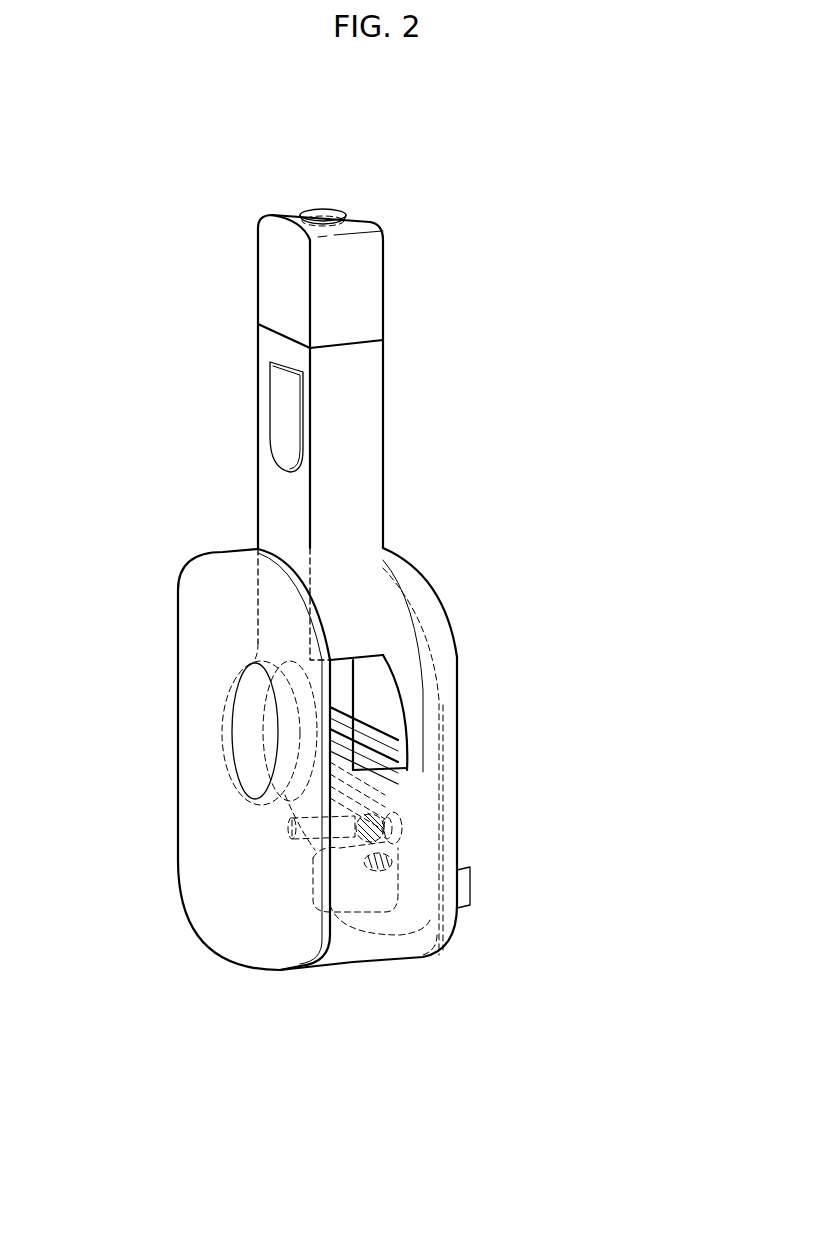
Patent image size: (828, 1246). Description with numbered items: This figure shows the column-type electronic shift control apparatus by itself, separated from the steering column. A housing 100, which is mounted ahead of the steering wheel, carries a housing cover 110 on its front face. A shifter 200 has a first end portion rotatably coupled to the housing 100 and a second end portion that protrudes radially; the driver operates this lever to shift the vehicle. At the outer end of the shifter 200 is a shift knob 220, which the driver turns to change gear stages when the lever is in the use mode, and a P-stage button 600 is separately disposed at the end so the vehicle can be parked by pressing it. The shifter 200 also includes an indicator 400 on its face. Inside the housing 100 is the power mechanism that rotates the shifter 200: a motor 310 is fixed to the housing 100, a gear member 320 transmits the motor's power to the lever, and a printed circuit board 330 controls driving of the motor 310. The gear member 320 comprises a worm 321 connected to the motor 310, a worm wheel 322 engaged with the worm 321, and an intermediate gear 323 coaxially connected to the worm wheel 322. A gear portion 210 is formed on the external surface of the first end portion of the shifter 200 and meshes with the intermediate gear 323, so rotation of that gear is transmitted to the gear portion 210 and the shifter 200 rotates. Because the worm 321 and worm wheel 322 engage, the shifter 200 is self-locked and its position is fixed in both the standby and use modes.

The housing 100 is at (458, 675).
The housing cover 110 is at (203, 818).
The shifter 200 is at (322, 340).
The gear portion 210 is at (380, 787).
The shift knob 220 is at (277, 275).
The motor 310 is at (342, 905).
The gear member 320 is at (492, 921).
The worm 321 is at (390, 897).
The worm wheel 322 is at (410, 852).
The intermediate gear 323 is at (407, 822).
The printed circuit board 330 is at (420, 802).
The indicator 400 is at (282, 405).
The P-stage button 600 is at (323, 212).